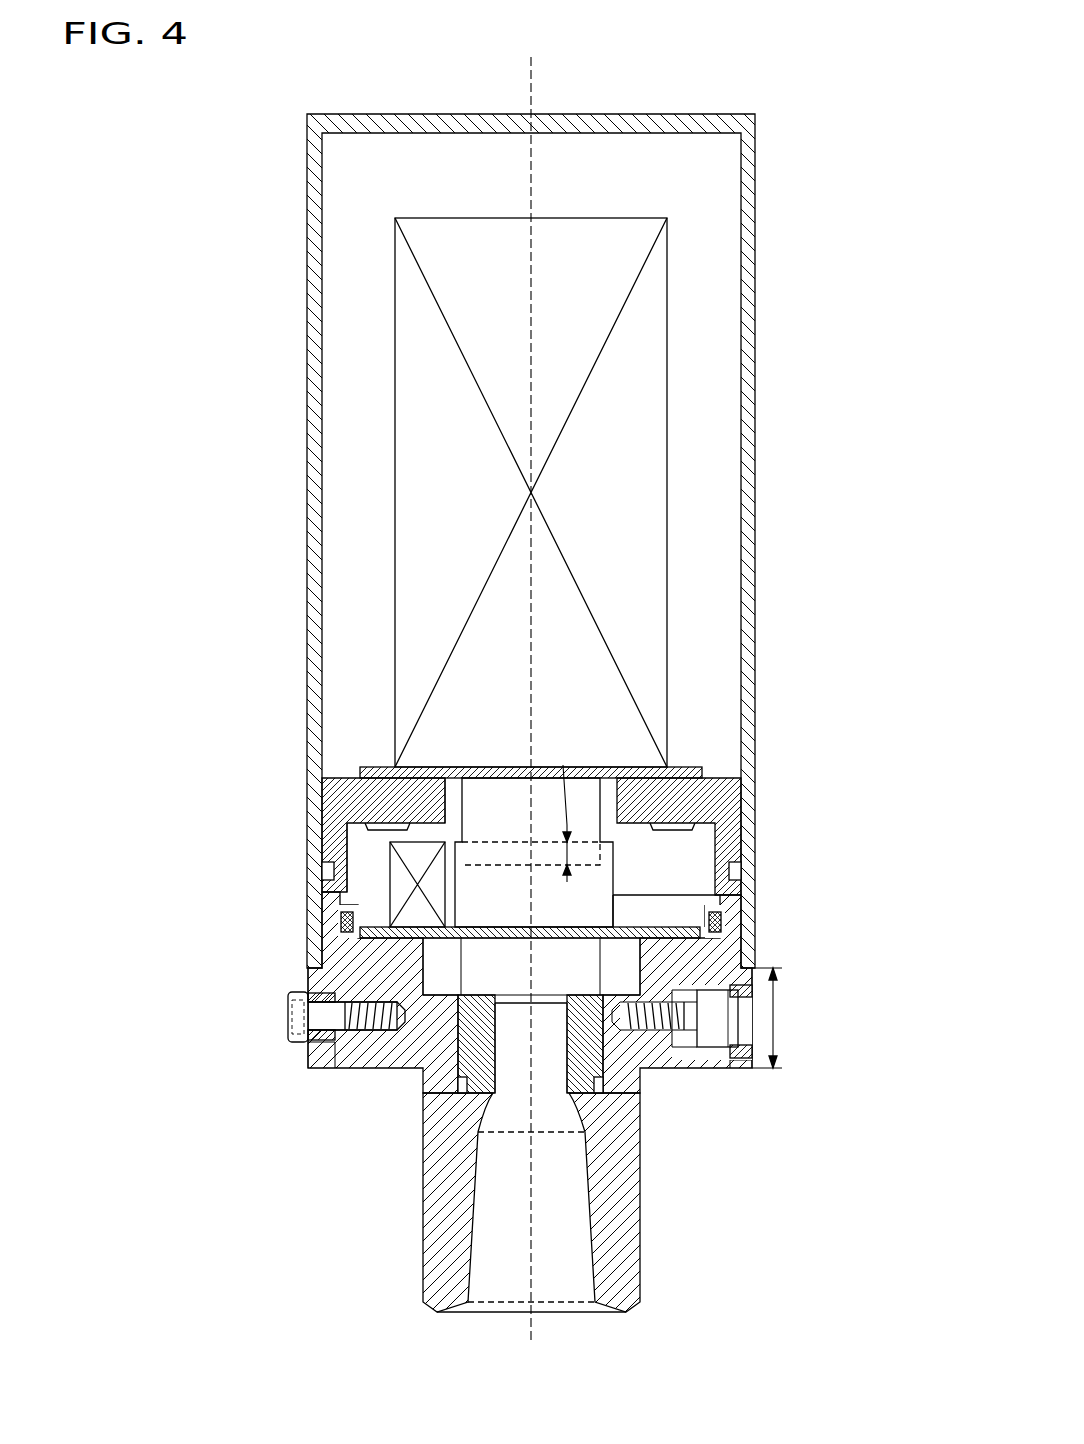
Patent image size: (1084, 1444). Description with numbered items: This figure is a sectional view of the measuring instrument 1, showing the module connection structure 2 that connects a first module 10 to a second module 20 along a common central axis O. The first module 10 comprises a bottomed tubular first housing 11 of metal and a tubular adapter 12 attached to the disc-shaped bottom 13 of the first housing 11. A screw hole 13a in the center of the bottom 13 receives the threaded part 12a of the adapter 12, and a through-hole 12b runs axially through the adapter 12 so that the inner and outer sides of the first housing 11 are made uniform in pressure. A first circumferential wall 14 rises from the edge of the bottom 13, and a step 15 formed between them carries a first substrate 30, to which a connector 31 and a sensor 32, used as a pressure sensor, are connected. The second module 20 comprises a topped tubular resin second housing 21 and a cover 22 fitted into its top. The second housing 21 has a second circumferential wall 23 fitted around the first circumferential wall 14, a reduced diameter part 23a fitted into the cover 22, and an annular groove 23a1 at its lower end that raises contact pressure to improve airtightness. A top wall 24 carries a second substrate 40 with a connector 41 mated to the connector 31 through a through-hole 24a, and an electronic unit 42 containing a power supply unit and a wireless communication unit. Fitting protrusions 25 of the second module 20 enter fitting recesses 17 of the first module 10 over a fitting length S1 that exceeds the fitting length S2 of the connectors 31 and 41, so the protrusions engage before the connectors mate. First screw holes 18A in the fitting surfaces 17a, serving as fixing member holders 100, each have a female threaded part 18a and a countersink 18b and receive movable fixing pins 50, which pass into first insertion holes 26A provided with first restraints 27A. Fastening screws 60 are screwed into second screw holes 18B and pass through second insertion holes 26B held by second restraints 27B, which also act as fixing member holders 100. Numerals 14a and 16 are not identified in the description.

The measuring instrument 1 is at (275, 134).
The module connection structure 2 is at (178, 904).
The first module 10 is at (208, 1150).
The first housing 11 is at (451, 1103).
The adapter 12 is at (469, 1211).
The threaded part 12a is at (607, 1105).
The through-hole 12b is at (572, 1265).
The bottom 13 is at (640, 1048).
The screw hole 13a is at (590, 1098).
The first circumferential wall 14 is at (660, 942).
The plate opening 14a is at (697, 943).
The step 15 is at (735, 870).
The seal ring 16 is at (720, 922).
The fitting recess 17 is at (310, 1060).
The fitting surface 17a is at (342, 1068).
The first screw hole 18A is at (772, 1098).
The second screw hole 18B is at (513, 1046).
The female threaded part 18a is at (662, 1050).
The countersink 18b is at (658, 1040).
The second module 20 is at (183, 614).
The second housing 21 is at (298, 800).
The cover 22 is at (298, 643).
The second circumferential wall 23 is at (467, 863).
The reduced diameter part 23a is at (323, 832).
The annular groove 23a1 is at (326, 869).
The top wall 24 is at (387, 790).
The through-hole 24a is at (478, 790).
The fitting protrusion 25 is at (320, 1040).
The first insertion hole 26A is at (748, 990).
The second insertion hole 26B is at (296, 1019).
The first restraint 27A is at (750, 1058).
The second restraint 27B is at (325, 992).
The first substrate 30 is at (661, 841).
The connector 31 is at (616, 860).
The sensor 32 is at (392, 864).
The second substrate 40 is at (614, 507).
The connector 41 is at (642, 773).
The electronic unit 42 is at (670, 470).
The movable fixing pin 50 is at (764, 1029).
The fastening screw 60 is at (288, 1015).
The fixing member holder 100 is at (536, 1081).
The central axis O is at (531, 92).
The fitting length S1 is at (802, 1018).
The fitting length S2 is at (560, 805).